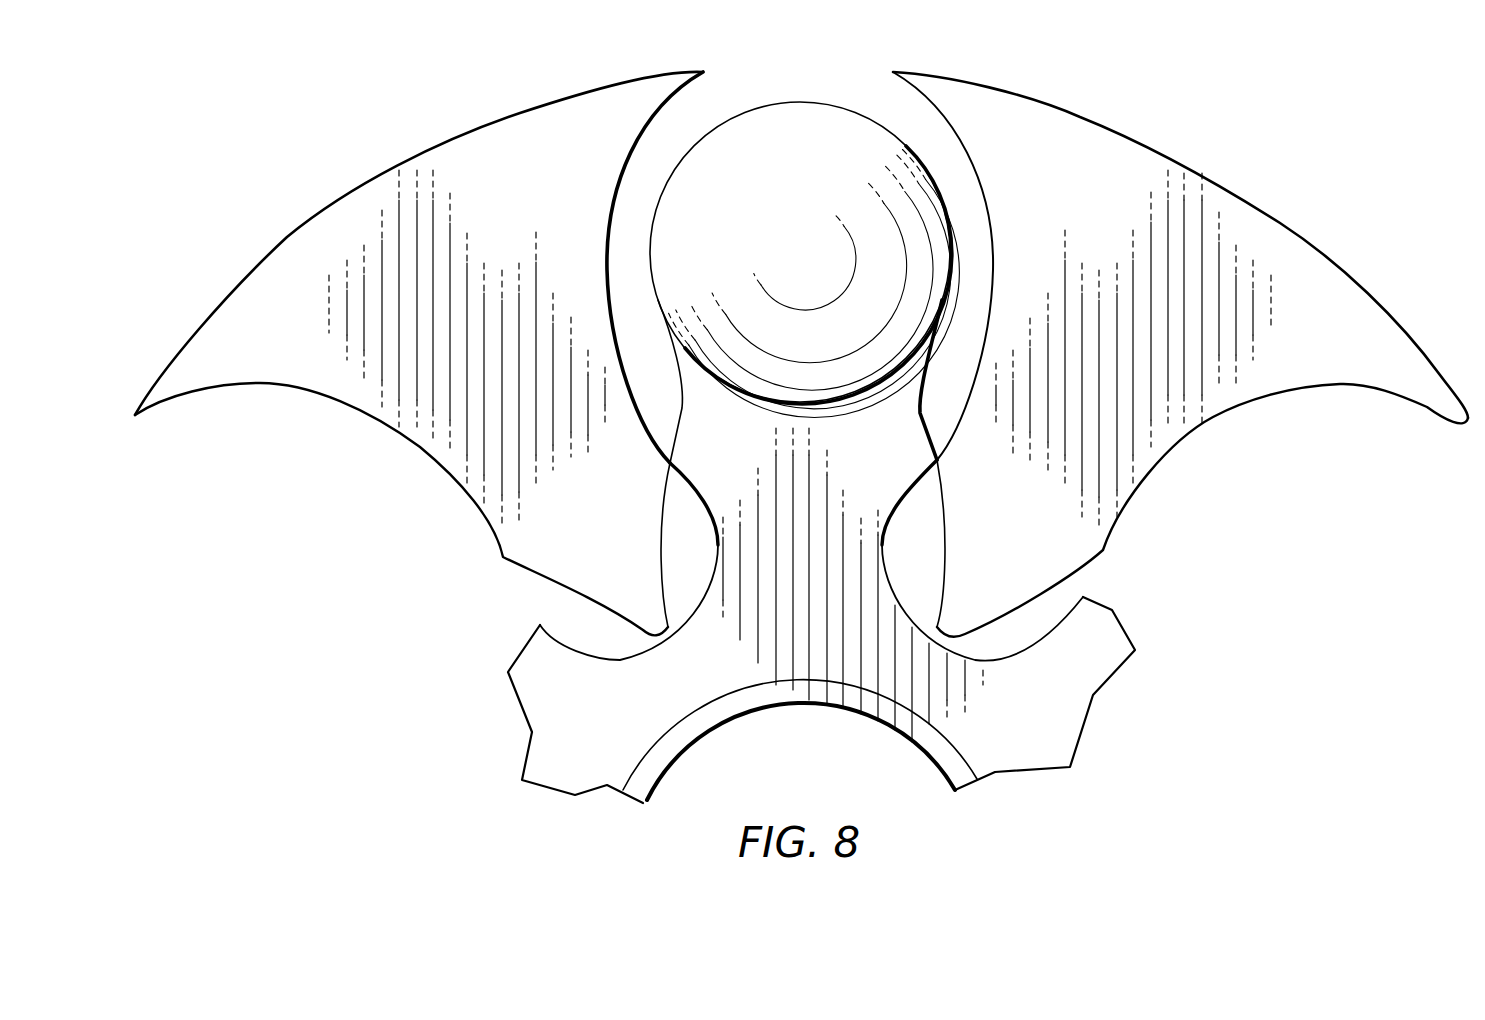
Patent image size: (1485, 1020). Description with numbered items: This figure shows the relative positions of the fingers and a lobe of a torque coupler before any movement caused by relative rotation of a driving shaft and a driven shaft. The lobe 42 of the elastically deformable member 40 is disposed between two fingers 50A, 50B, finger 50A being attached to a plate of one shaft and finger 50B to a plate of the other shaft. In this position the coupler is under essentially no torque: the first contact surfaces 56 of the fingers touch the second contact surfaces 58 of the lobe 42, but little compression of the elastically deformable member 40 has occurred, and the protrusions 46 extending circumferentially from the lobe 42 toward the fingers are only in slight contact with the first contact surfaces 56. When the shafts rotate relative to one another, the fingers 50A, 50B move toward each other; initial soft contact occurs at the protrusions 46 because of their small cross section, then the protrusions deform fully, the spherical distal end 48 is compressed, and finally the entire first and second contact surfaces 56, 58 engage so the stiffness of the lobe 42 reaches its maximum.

The elastically deformable member 40 is at (1031, 717).
The lobe 42 is at (877, 508).
The protrusion 46 is at (670, 463).
The spherical distal end 48 is at (805, 113).
The finger 50A is at (1073, 135).
The finger 50B is at (312, 370).
The first contact surface 56 is at (653, 130).
The second contact surface 58 is at (680, 408).